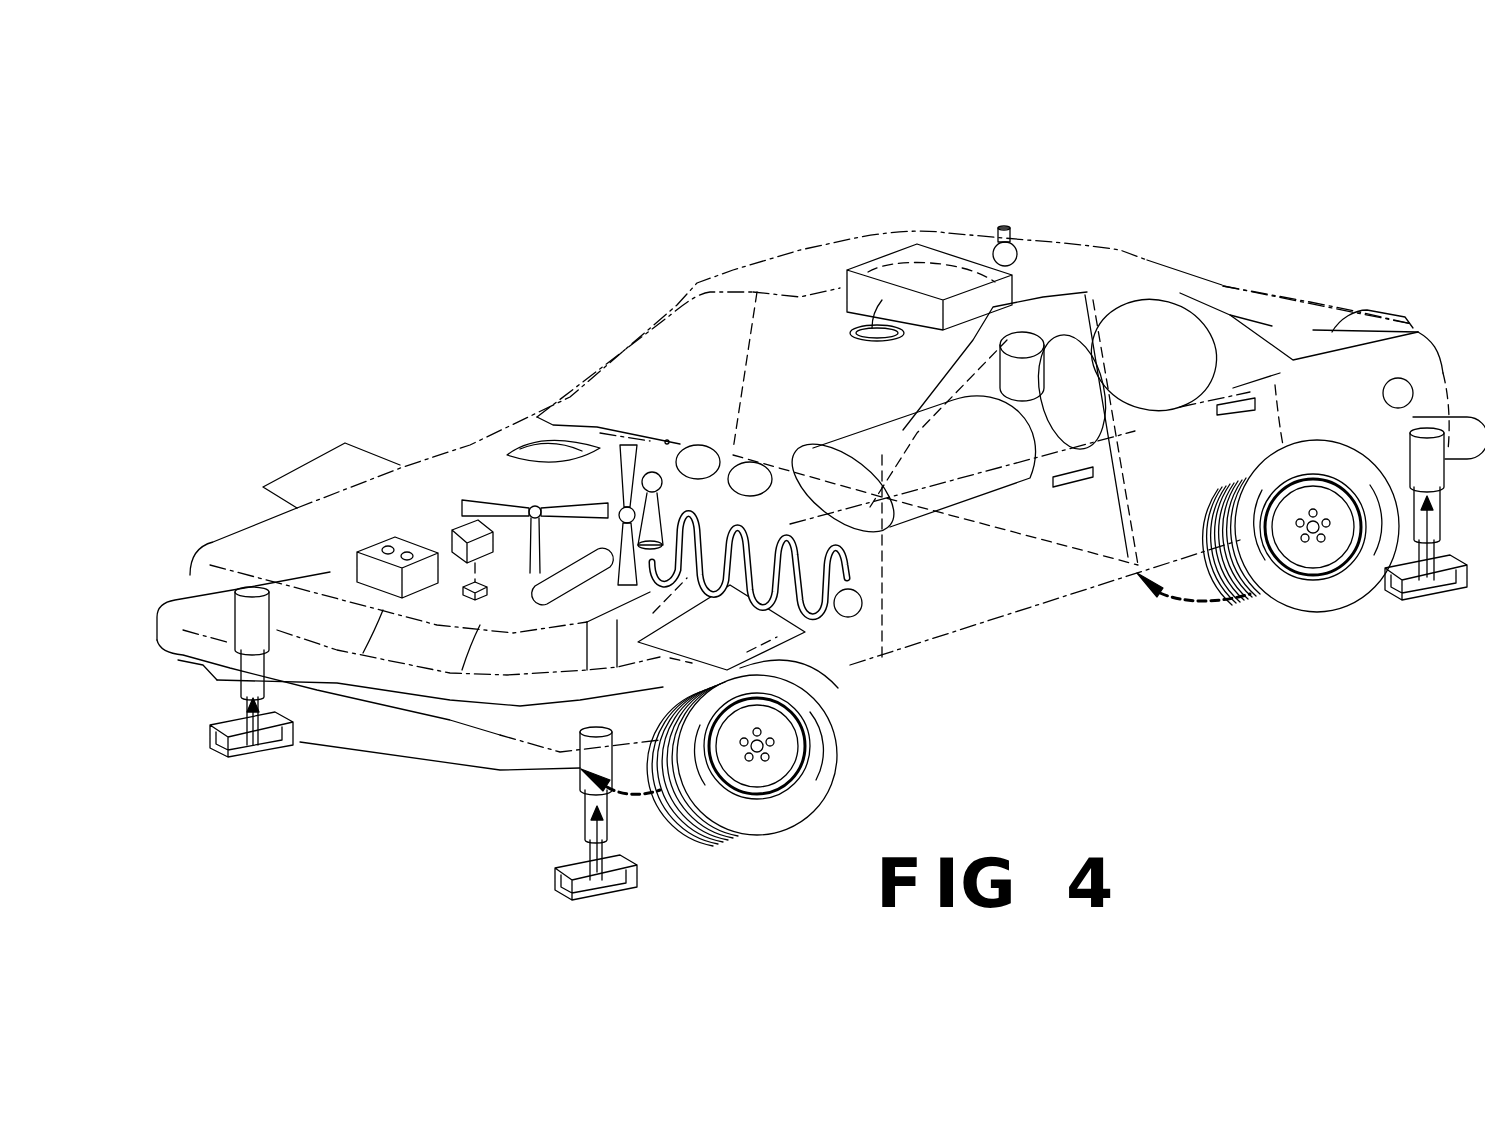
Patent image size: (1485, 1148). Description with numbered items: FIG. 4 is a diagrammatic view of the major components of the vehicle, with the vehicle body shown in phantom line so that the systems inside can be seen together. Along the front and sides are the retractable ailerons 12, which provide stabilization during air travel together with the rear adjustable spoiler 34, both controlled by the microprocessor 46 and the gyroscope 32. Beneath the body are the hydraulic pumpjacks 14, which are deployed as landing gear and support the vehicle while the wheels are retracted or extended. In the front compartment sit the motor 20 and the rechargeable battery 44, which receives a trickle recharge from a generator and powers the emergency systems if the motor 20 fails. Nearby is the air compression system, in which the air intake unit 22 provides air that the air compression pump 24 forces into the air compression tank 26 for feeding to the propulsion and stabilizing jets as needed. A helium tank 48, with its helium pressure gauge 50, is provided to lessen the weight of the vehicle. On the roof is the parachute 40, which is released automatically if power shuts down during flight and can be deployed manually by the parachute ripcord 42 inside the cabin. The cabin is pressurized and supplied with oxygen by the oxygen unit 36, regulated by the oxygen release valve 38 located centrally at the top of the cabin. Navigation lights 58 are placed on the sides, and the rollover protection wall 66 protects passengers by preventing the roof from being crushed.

The retractable ailerons 12 is at (307, 482).
The hydraulic pumpjacks 14 is at (247, 678).
The motor 20 is at (531, 507).
The air intake unit 22 is at (557, 447).
The air compression pump 24 is at (1025, 345).
The air compression tank 26 is at (1178, 378).
The gyroscope 32 is at (475, 600).
The adjustable spoiler 34 is at (1305, 313).
The oxygen unit 36 is at (575, 577).
The oxygen release valve 38 is at (1008, 230).
The parachute 40 is at (917, 267).
The parachute ripcord 42 is at (853, 325).
The rechargeable battery 44 is at (705, 452).
The microprocessor 46 is at (451, 530).
The helium tank 48 is at (882, 423).
The helium pressure gauge 50 is at (770, 486).
The navigation lights 58 is at (861, 613).
The rollover protection wall 66 is at (1150, 578).